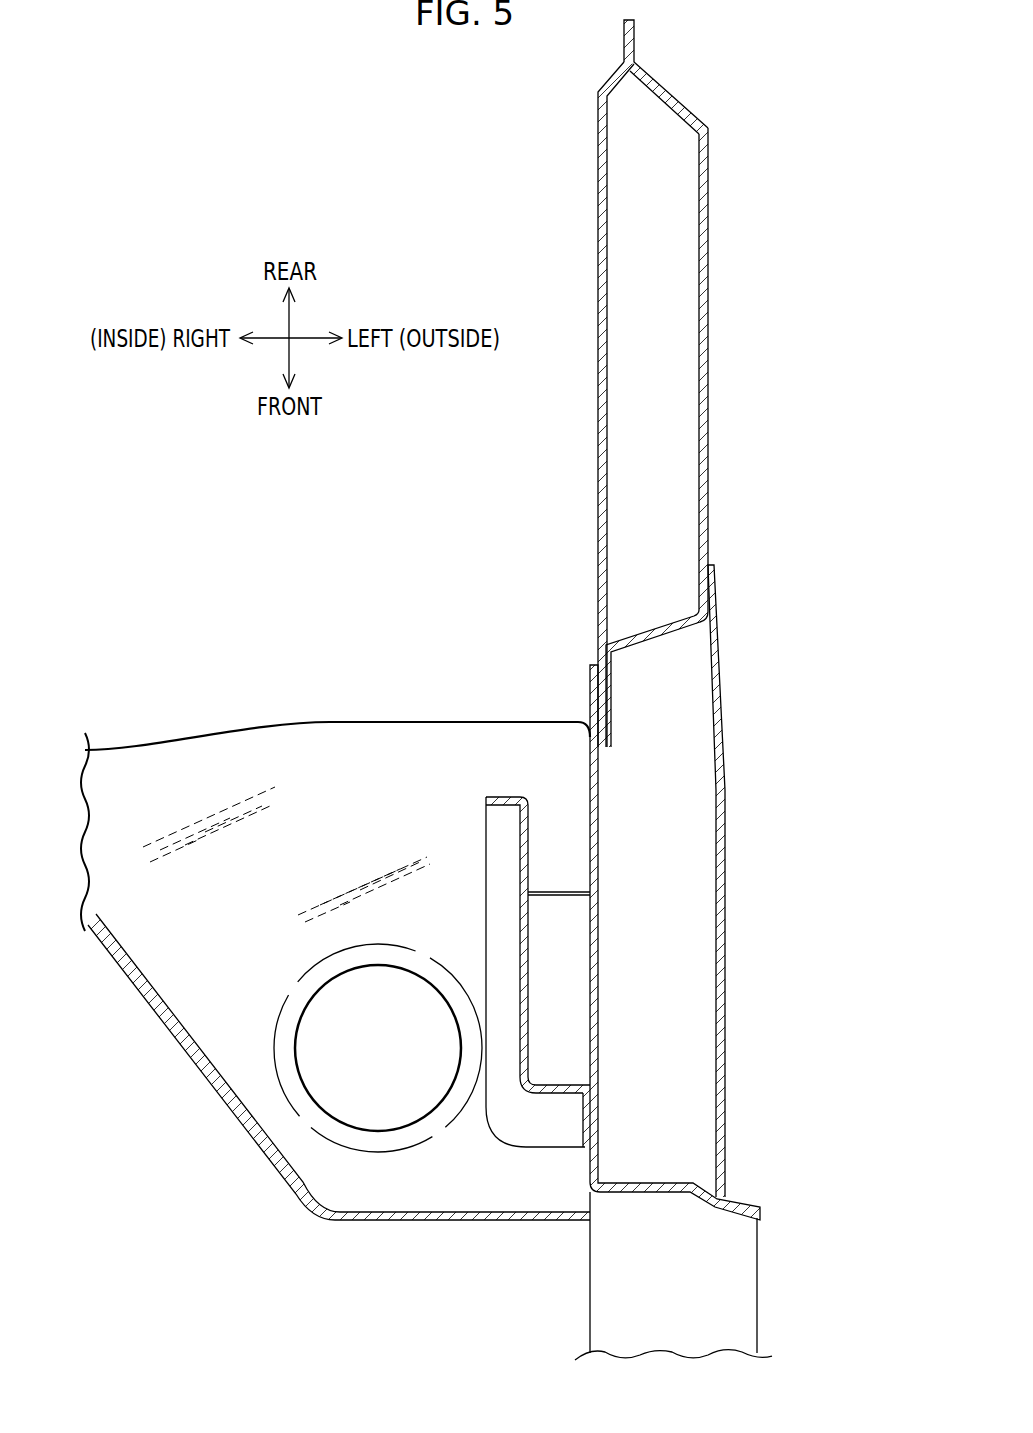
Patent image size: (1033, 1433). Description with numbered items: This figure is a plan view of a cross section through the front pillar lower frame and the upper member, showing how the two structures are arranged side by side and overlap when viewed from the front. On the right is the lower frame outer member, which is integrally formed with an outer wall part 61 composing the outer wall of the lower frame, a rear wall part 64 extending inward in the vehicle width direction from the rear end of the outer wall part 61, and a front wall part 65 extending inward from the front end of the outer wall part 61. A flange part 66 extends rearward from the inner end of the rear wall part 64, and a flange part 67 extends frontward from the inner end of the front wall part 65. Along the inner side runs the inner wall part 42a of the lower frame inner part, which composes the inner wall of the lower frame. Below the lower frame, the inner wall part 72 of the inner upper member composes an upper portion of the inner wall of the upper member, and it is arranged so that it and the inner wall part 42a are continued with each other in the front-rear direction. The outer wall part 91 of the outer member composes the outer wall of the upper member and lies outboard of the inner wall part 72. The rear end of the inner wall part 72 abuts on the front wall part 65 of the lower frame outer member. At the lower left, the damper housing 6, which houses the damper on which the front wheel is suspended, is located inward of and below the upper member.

The damper housing 6 is at (253, 1130).
The inner wall part 42a is at (597, 272).
The outer wall part 61 is at (708, 279).
The rear wall part 64 is at (673, 97).
The front wall part 65 is at (657, 642).
The flange part 66 is at (635, 32).
The flange part 67 is at (610, 720).
The inner wall part 72 is at (598, 961).
The outer wall part 91 is at (725, 895).